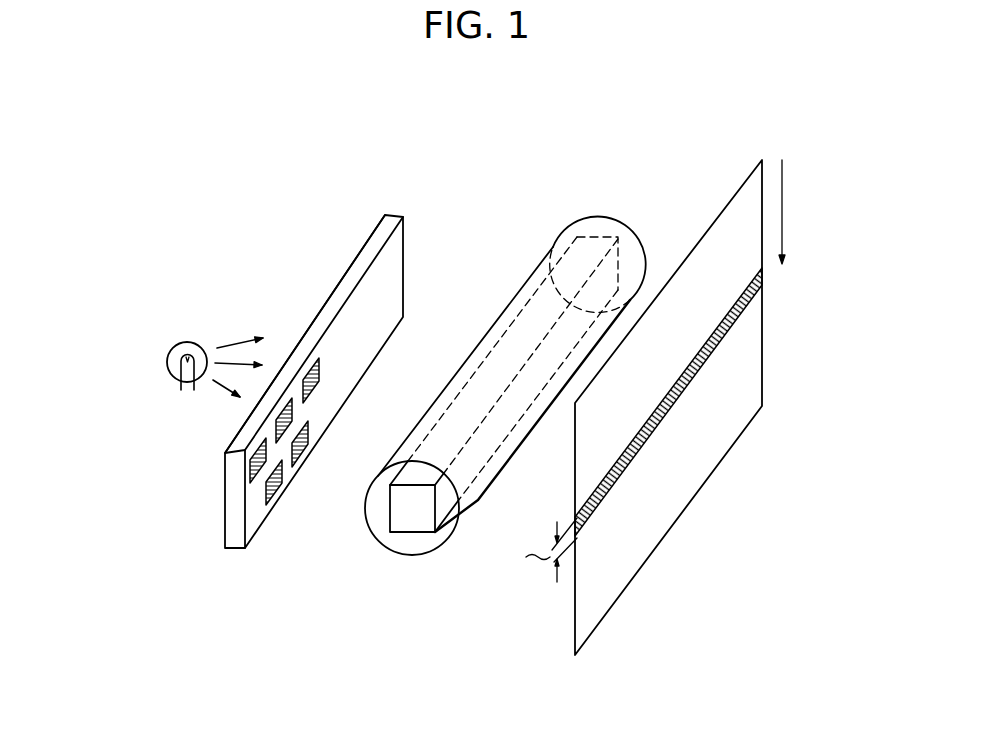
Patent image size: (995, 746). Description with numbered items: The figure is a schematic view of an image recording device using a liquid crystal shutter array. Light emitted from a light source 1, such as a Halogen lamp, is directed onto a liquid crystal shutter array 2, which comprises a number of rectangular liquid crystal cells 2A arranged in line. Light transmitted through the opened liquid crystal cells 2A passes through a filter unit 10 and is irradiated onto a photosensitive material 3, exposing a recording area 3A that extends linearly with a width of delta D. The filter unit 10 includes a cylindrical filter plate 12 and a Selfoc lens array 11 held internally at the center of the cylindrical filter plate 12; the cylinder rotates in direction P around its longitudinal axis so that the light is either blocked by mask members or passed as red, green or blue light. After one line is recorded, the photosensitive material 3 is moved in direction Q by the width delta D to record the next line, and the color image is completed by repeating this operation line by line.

The light source 1 is at (188, 335).
The liquid crystal shutter array 2 is at (400, 199).
The liquid crystal cells 2A is at (271, 504).
The photosensitive material 3 is at (673, 507).
The recording area 3A is at (616, 462).
The filter unit 10 is at (518, 221).
The Selfoc lens array 11 is at (424, 533).
The cylindrical filter plate 12 is at (367, 526).